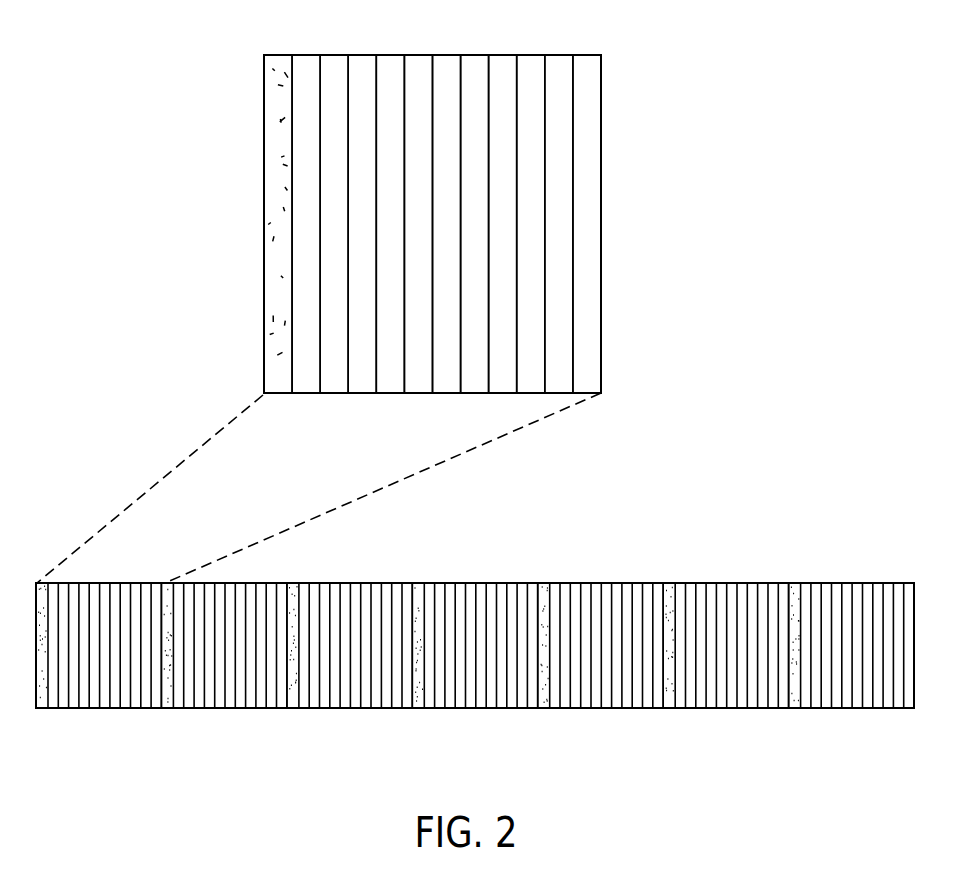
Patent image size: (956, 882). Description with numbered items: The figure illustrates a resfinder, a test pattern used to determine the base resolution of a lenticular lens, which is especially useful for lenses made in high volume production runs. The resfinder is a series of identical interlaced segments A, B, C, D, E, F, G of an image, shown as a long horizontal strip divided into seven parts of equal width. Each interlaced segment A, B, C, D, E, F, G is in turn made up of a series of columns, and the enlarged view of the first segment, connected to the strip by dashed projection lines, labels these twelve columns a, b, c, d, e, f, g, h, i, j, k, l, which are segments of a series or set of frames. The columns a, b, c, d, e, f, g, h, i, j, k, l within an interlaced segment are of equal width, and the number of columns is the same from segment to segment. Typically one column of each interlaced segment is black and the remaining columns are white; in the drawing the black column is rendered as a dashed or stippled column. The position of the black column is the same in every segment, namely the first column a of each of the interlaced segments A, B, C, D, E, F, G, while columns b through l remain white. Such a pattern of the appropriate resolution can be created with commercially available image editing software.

The column a is at (278, 210).
The column b is at (306, 210).
The column c is at (334, 210).
The column d is at (362, 210).
The column e is at (390, 210).
The column f is at (418, 210).
The column g is at (447, 210).
The column h is at (475, 210).
The column i is at (503, 210).
The column j is at (531, 210).
The column k is at (559, 210).
The column l is at (587, 210).
The interlaced segment A is at (98, 666).
The interlaced segment B is at (224, 666).
The interlaced segment C is at (349, 666).
The interlaced segment D is at (474, 666).
The interlaced segment E is at (601, 666).
The interlaced segment F is at (725, 666).
The interlaced segment G is at (851, 666).